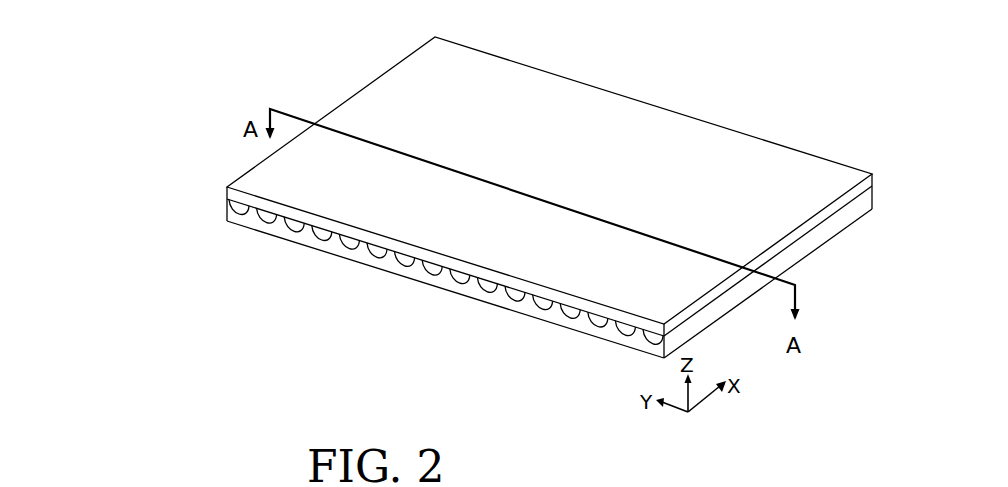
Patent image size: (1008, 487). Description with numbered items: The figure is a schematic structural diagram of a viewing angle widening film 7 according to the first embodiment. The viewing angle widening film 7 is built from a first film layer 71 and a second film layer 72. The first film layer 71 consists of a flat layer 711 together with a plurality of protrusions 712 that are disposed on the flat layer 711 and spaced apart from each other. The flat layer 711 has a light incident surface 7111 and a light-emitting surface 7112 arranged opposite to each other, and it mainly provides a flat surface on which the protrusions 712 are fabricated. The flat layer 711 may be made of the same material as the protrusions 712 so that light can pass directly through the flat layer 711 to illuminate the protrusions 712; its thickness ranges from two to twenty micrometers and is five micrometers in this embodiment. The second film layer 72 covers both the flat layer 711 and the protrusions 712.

The viewing angle widening film 7 is at (351, 49).
The first film layer 71 is at (140, 154).
The flat layer 711 is at (507, 226).
The light incident surface 7111 is at (549, 226).
The light-emitting surface 7112 is at (446, 288).
The protrusions 712 is at (507, 278).
The second film layer 72 is at (514, 278).